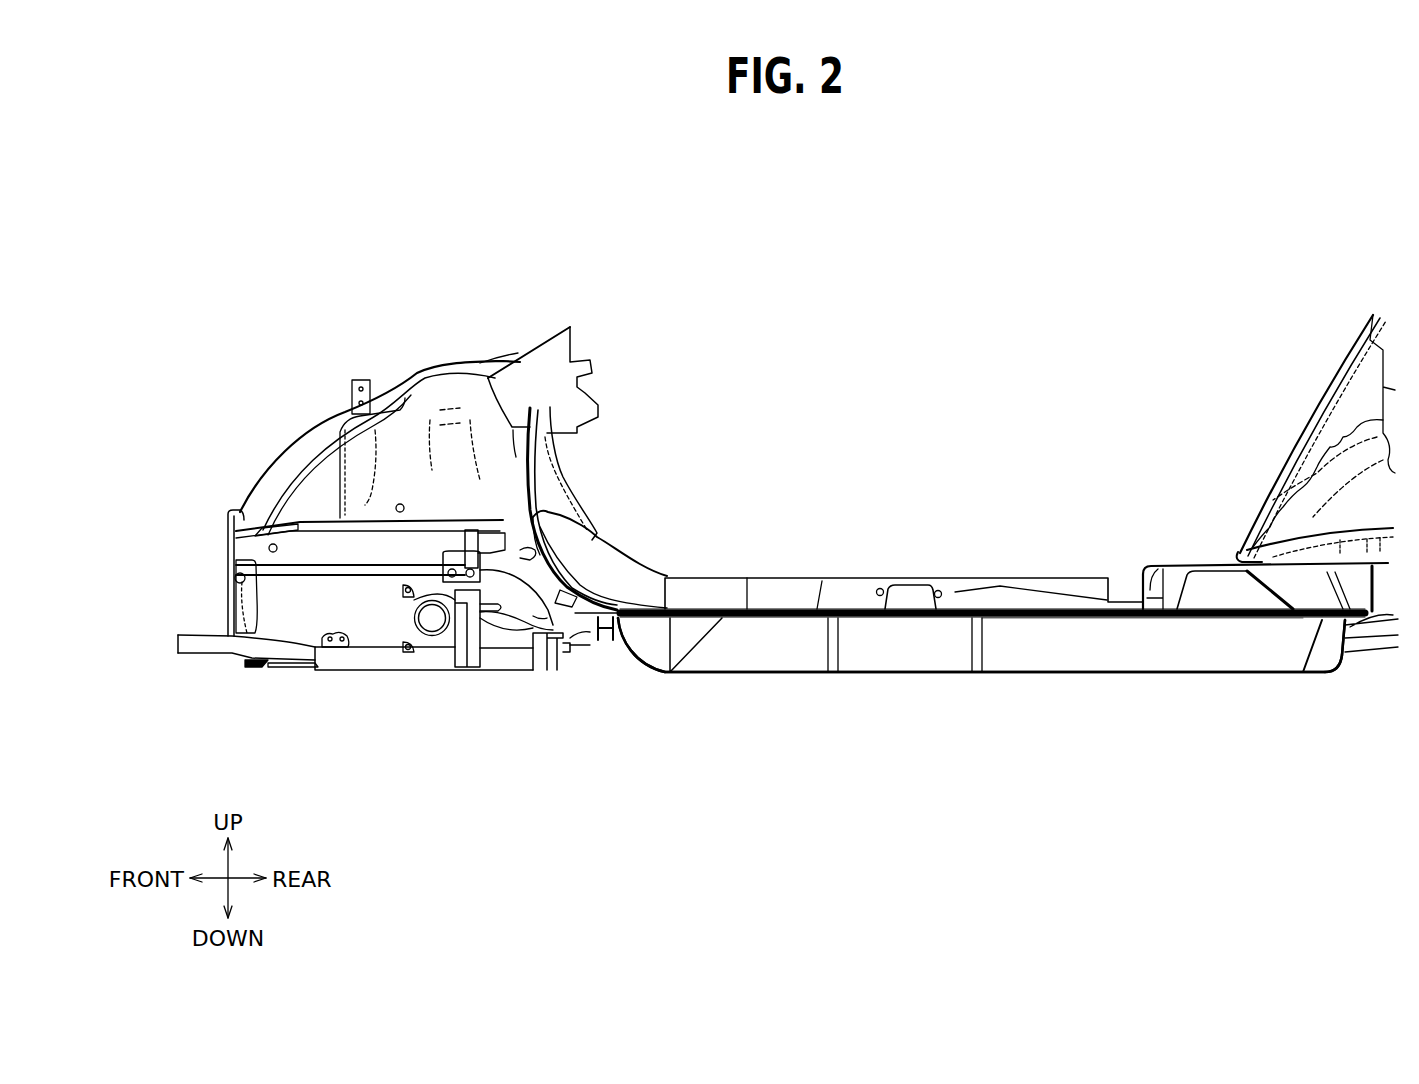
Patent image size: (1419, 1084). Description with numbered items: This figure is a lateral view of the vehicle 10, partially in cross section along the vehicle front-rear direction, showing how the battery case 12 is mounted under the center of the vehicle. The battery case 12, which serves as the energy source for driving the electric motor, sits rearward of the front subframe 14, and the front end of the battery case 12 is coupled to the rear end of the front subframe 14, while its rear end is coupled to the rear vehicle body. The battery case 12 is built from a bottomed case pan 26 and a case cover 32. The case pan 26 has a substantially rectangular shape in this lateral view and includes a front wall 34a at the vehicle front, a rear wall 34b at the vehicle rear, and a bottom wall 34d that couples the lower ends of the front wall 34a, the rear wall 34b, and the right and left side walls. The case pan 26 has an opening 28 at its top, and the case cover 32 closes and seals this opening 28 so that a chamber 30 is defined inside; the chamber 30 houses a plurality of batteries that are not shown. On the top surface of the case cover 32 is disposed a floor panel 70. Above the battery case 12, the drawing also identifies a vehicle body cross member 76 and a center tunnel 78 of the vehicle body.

The vehicle 10 is at (1187, 178).
The battery case 12 is at (900, 692).
The front subframe 14 is at (402, 691).
The case pan 26 is at (1060, 681).
The opening 28 is at (677, 655).
The chamber 30 is at (1069, 659).
The case cover 32 is at (948, 624).
The front wall 34a is at (632, 672).
The rear wall 34b is at (1362, 662).
The bottom wall 34d is at (772, 676).
The floor panel 70 is at (748, 600).
The vehicle body cross member 76 is at (906, 586).
The center tunnel 78 is at (803, 585).